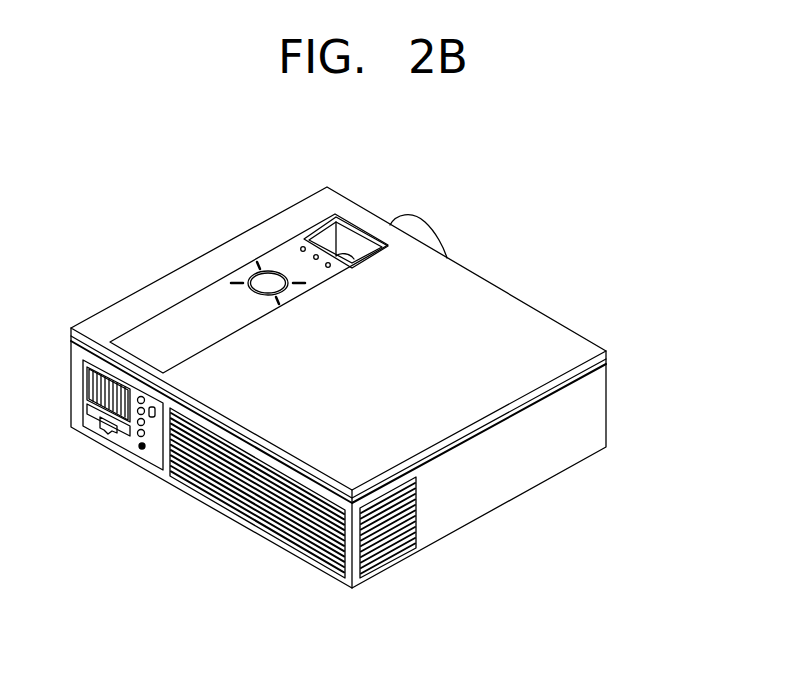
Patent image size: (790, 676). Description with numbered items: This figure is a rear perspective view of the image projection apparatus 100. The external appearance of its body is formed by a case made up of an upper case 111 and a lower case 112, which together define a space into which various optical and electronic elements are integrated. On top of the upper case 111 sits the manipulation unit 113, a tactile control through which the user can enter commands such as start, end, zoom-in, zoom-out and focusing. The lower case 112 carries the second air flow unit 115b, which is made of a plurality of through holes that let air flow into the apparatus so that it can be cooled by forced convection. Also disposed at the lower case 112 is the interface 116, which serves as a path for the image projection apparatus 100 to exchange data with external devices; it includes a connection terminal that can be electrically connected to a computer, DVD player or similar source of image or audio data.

The image projection apparatus 100 is at (517, 288).
The upper case 111 is at (607, 352).
The lower case 112 is at (602, 400).
The manipulation unit 113 is at (291, 264).
The second air flow unit 115b is at (260, 517).
The interface 116 is at (140, 436).